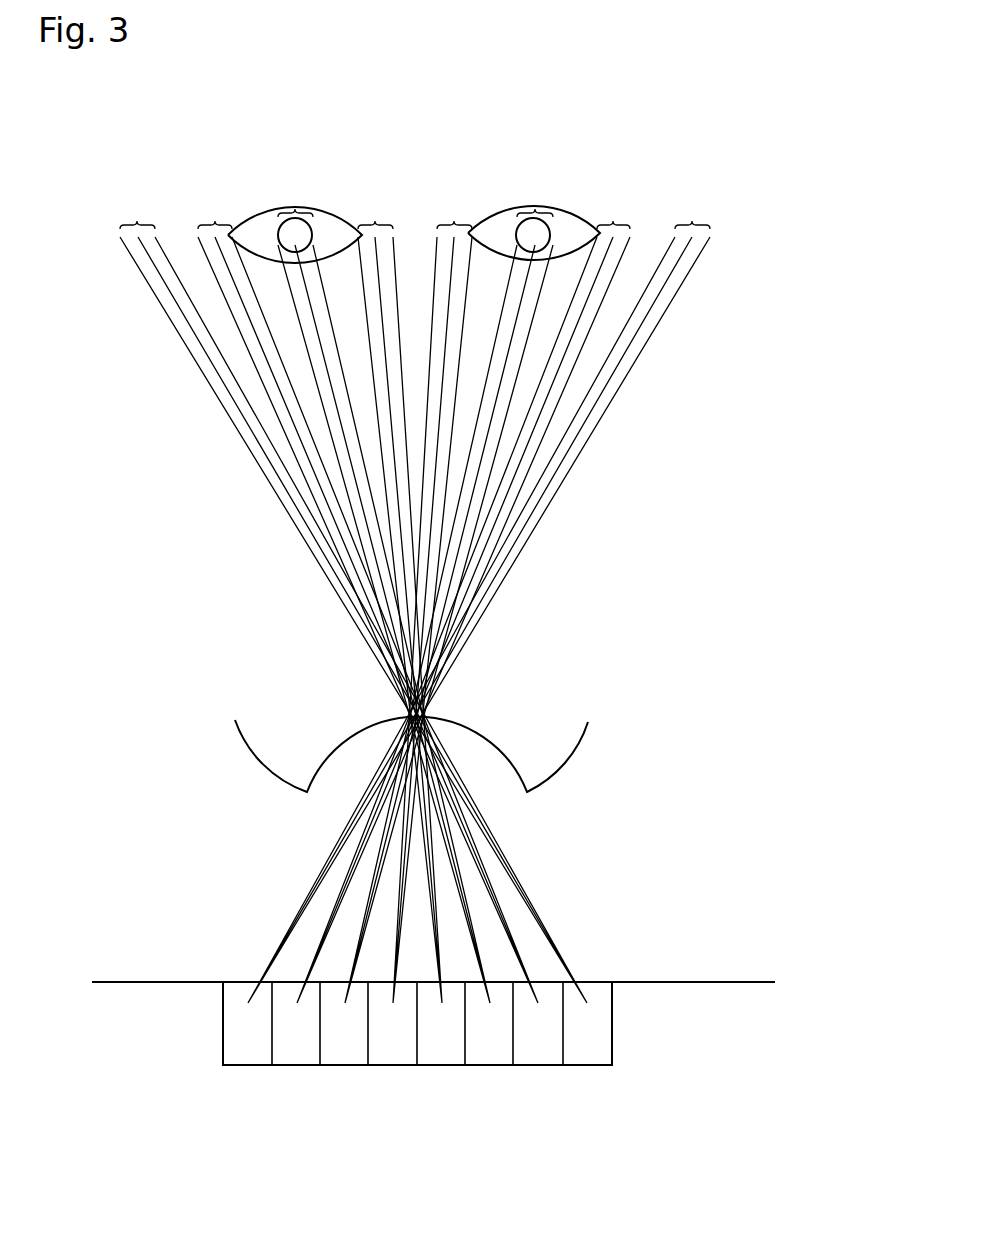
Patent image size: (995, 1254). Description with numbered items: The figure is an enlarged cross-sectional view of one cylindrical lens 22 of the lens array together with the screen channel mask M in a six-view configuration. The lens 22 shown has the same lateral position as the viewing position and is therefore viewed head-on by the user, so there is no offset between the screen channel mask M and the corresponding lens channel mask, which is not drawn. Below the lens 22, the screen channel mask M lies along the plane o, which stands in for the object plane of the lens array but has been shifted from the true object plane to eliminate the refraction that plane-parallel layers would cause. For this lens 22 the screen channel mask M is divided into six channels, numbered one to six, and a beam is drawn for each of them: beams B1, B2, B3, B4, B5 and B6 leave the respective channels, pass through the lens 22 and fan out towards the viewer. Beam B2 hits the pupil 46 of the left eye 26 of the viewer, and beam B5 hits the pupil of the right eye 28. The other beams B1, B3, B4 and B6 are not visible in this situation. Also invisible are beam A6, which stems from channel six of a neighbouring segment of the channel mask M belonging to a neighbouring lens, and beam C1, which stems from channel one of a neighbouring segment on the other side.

The lens 22 is at (493, 740).
The left eye 26 is at (615, 199).
The right eye 28 is at (260, 208).
The pupil 46 is at (552, 235).
The screen channel mask M is at (392, 1068).
The plane o is at (700, 980).
The beam C1 is at (353, 593).
The beam B6 is at (368, 593).
The beam B5 is at (384, 589).
The beam B4 is at (400, 593).
The beam B3 is at (432, 593).
The beam B2 is at (449, 589).
The beam B1 is at (463, 593).
The beam A6 is at (479, 593).